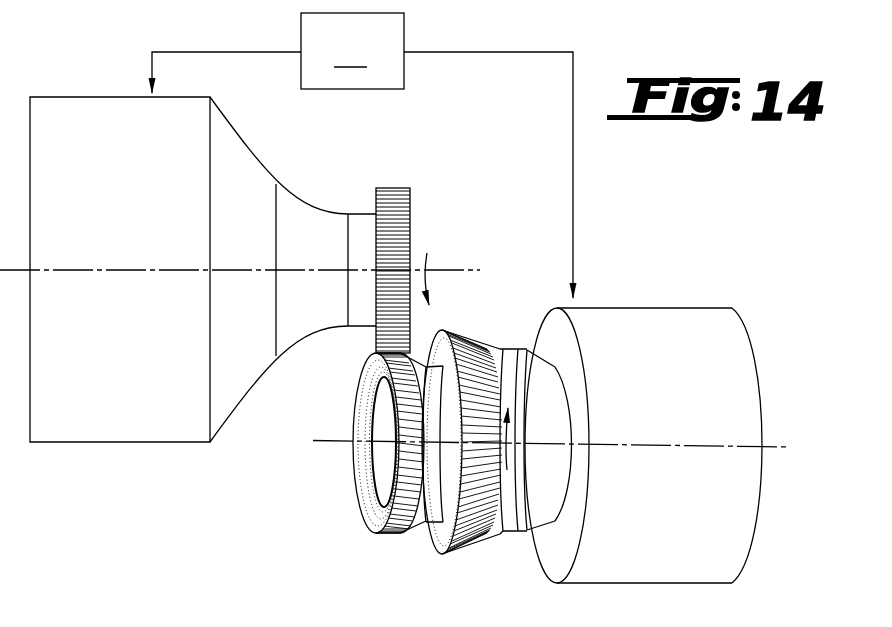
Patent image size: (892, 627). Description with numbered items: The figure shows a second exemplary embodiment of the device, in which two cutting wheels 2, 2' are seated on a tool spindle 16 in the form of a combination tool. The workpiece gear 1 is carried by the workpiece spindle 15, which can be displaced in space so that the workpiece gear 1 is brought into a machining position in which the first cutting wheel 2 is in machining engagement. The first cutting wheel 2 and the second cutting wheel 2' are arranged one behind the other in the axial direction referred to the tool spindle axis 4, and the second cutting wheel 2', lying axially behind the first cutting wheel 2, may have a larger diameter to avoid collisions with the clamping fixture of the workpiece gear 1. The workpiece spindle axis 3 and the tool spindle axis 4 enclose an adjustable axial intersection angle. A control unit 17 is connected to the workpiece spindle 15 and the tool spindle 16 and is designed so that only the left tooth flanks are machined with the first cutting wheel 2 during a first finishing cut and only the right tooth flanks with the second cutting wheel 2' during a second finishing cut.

The workpiece gear 1 is at (400, 180).
The first cutting wheel 2 is at (347, 460).
The second cutting wheel 2' is at (436, 469).
The workpiece spindle axis 3 is at (450, 270).
The tool spindle axis 4 is at (333, 443).
The workpiece spindle 15 is at (150, 405).
The tool spindle 16 is at (672, 330).
The control unit 17 is at (362, 155).